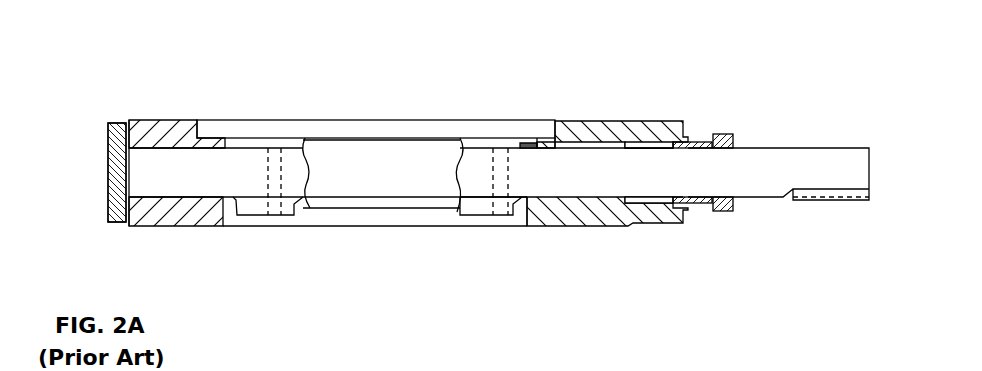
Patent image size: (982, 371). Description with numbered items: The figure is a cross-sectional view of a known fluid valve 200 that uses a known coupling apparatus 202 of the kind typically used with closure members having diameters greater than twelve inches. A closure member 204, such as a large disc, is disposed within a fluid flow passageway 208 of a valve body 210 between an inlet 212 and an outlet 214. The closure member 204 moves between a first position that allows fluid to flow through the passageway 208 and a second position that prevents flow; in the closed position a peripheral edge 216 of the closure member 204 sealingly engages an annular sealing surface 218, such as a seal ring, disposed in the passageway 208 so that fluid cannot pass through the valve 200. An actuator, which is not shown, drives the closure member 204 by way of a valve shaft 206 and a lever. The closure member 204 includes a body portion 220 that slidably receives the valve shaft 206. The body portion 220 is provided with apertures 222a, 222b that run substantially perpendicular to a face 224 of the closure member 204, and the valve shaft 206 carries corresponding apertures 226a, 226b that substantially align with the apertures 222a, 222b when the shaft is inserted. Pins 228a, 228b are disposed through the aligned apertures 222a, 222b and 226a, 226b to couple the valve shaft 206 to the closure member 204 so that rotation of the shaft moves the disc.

The valve 200 is at (122, 36).
The coupling apparatus 202 is at (484, 50).
The closure member 204 is at (362, 188).
The valve shaft 206 is at (780, 148).
The fluid flow passageway 208 is at (217, 120).
The valve body 210 is at (160, 226).
The inlet 212 is at (410, 119).
The outlet 214 is at (303, 227).
The peripheral edge 216 is at (530, 138).
The annular sealing surface 218 is at (543, 150).
The body portion 220 is at (563, 225).
The aperture 222a is at (520, 210).
The aperture 222b is at (268, 212).
The face 224 is at (253, 138).
The aperture 226a is at (507, 167).
The aperture 226b is at (268, 167).
The pin 228a is at (502, 210).
The pin 228b is at (275, 208).